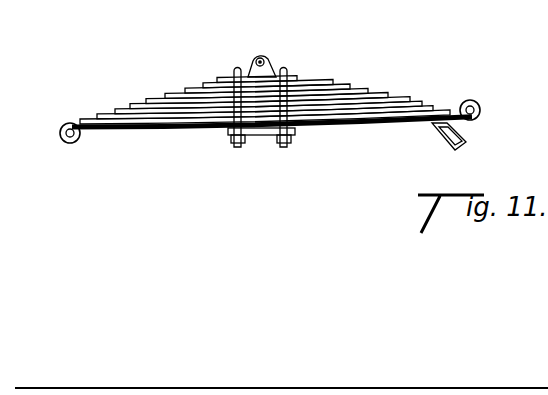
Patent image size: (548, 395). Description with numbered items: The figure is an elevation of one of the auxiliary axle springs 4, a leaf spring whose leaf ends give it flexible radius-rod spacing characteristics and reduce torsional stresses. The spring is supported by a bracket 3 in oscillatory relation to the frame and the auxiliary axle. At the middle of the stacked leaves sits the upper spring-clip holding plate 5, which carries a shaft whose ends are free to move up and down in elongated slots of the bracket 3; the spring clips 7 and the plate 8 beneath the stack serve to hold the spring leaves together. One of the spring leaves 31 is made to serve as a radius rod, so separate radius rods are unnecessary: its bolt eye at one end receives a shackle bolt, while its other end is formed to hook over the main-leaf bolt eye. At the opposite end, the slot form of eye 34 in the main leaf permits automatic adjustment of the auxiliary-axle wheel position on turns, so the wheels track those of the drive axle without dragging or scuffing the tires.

The bracket 3 is at (285, 95).
The spring leaf 31 is at (67, 122).
The auxiliary axle spring 4 is at (333, 97).
The upper spring-clip holding plate 5 is at (273, 64).
The spring clip 7 is at (232, 79).
The plate 8 is at (260, 131).
The slot form of eye 34 is at (458, 150).